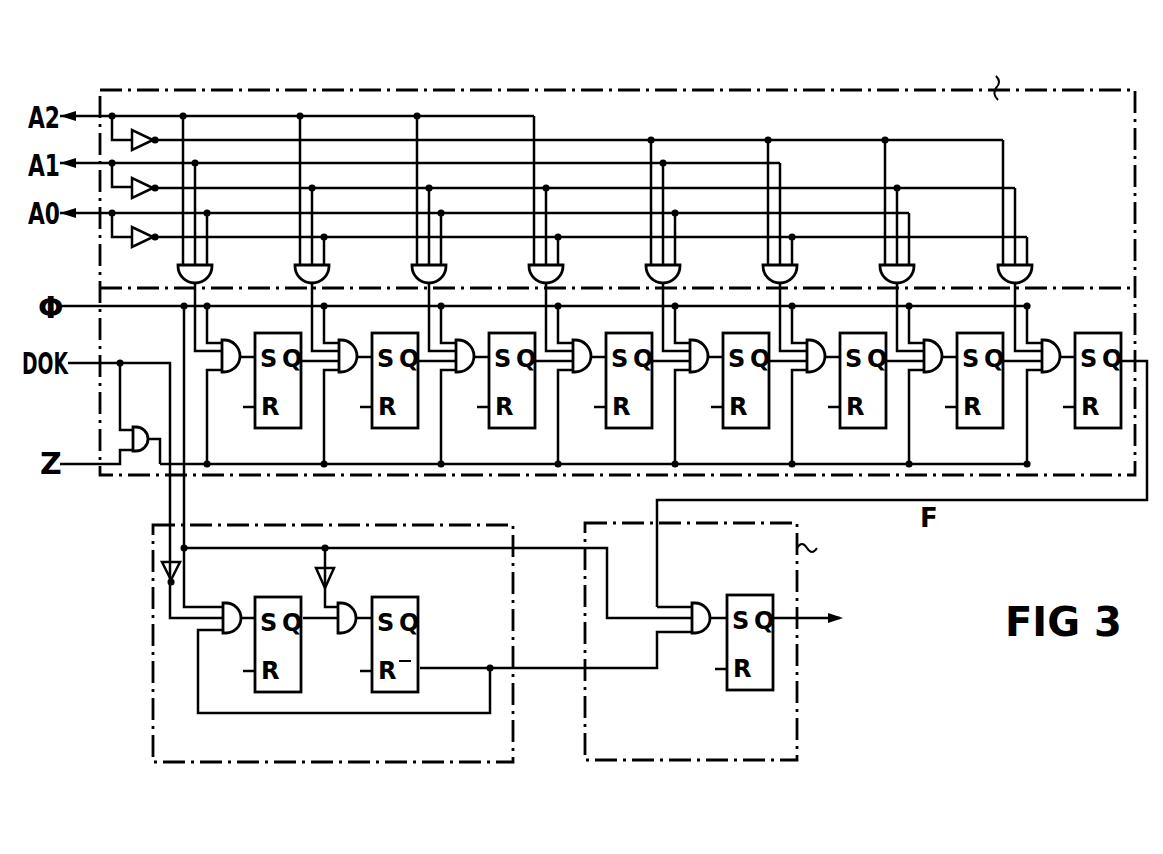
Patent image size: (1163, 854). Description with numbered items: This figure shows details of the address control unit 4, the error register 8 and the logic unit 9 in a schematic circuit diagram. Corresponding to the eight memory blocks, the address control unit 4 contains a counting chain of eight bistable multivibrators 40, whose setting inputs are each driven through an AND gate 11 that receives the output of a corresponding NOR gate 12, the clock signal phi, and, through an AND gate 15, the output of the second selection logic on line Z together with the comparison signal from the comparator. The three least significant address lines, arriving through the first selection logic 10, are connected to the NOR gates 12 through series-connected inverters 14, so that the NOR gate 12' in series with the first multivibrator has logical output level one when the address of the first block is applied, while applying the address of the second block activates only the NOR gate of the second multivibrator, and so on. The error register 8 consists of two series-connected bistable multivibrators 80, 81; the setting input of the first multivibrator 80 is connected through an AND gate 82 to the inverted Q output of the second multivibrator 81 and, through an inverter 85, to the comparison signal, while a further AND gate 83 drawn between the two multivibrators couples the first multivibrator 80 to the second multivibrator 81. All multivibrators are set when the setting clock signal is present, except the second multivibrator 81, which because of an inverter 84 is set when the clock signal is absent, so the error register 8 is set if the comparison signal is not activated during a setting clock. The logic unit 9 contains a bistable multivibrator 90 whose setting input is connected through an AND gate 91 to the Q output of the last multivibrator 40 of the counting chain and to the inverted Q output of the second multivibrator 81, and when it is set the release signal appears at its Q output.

The first selection logic 10 is at (1127, 176).
The address control unit 4 is at (1127, 323).
The inverters 14 is at (147, 191).
The NOR gate 12' is at (213, 281).
The NOR gates 12 is at (649, 281).
The AND gates 11 is at (469, 343).
The bistable multivibrators 40 is at (509, 430).
The AND gate 15 is at (140, 426).
The error register 8 is at (162, 742).
The inverter 85 is at (181, 571).
The inverter 84 is at (342, 568).
The AND gate 82 is at (231, 633).
The AND gate 83 is at (352, 602).
The first bistable multivibrator 80 is at (302, 675).
The second bistable multivibrator 81 is at (418, 638).
The logic unit 9 is at (787, 737).
The AND gate 91 is at (703, 597).
The bistable multivibrator 90 is at (761, 675).